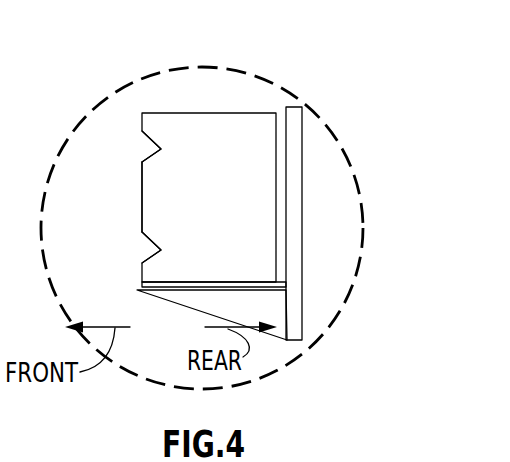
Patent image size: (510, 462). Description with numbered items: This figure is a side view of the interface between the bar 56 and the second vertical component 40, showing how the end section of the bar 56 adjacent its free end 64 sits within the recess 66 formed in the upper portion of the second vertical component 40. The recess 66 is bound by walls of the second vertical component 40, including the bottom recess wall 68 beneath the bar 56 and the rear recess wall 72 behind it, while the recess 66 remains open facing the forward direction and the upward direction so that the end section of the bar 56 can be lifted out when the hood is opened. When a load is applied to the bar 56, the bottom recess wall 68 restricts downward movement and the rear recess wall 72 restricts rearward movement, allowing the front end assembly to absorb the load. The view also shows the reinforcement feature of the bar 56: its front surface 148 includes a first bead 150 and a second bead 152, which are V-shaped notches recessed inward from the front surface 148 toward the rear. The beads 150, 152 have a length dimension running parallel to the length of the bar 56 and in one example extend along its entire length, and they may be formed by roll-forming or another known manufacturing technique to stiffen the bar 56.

The second vertical component 40 is at (213, 300).
The bar 56 is at (233, 143).
The free end 64 is at (231, 211).
The recess 66 is at (272, 98).
The bottom recess wall 68 is at (177, 288).
The rear recess wall 72 is at (286, 197).
The front surface 148 is at (142, 192).
The first bead 150 is at (130, 140).
The second bead 152 is at (130, 241).